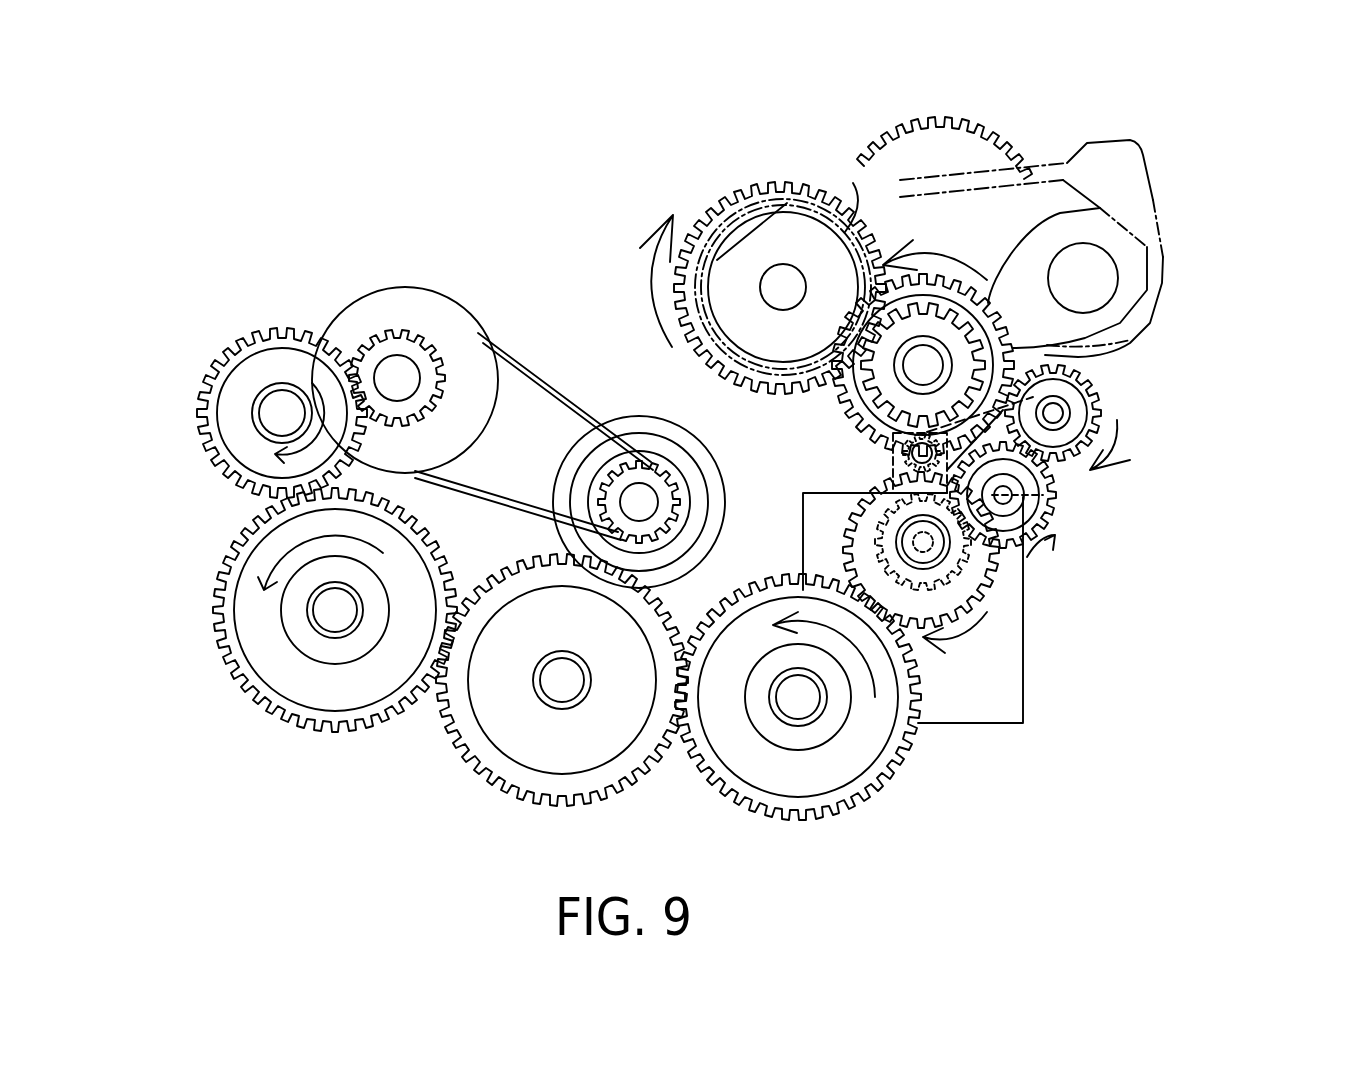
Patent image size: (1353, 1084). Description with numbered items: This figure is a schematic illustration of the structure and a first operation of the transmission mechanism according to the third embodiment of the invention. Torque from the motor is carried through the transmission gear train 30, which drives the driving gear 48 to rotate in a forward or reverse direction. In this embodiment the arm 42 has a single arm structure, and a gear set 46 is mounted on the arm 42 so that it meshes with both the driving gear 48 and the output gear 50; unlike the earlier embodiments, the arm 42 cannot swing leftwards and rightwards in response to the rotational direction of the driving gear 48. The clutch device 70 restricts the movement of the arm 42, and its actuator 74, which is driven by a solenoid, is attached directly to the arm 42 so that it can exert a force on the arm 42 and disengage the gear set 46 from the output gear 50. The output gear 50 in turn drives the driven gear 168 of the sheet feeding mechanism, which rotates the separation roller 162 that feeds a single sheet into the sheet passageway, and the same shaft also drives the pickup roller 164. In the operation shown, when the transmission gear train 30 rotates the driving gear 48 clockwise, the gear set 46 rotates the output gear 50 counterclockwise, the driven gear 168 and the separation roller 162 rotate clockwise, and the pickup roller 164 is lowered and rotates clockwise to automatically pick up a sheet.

The transmission gear train 30 is at (222, 703).
The driven gear 168 is at (728, 200).
The separation roller 162 is at (853, 183).
The output gear 50 is at (1100, 212).
The pickup roller 164 is at (1140, 343).
The gear set 46 is at (1107, 402).
The actuator 74 is at (1050, 437).
The arm 42 is at (1050, 520).
The driving gear 48 is at (993, 565).
The clutch device 70 is at (1000, 707).